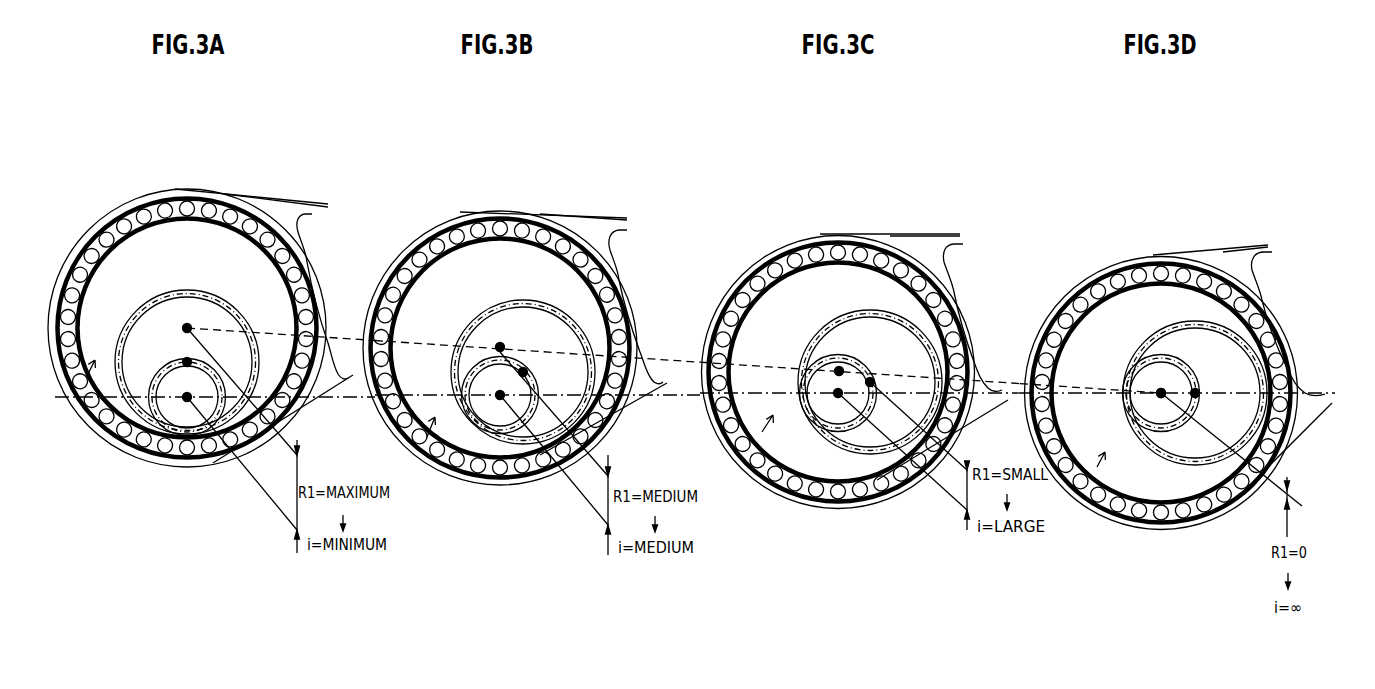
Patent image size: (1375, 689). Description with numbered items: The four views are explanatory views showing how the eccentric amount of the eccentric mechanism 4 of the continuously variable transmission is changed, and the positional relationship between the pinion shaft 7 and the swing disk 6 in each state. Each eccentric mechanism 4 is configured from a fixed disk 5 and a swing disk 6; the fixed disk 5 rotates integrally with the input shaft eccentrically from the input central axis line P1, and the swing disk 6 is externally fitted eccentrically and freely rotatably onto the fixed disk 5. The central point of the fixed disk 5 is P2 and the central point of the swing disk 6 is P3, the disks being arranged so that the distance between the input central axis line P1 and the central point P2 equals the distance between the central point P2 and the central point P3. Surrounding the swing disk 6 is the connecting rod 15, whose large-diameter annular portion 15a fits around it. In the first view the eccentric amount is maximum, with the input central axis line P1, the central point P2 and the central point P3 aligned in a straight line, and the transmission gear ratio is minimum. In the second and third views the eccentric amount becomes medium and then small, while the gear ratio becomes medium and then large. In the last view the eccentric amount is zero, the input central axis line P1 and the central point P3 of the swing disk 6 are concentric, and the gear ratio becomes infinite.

In FIG. 3A, the eccentric mechanism 4 is at (74, 398).
In FIG. 3B, the eccentric mechanism 4 is at (418, 453).
In FIG. 3C, the eccentric mechanism 4 is at (758, 452).
In FIG. 3D, the eccentric mechanism 4 is at (1086, 490).
In FIG. 3A, the fixed disk 5 is at (207, 317).
In FIG. 3B, the fixed disk 5 is at (528, 323).
In FIG. 3C, the fixed disk 5 is at (872, 333).
In FIG. 3D, the fixed disk 5 is at (1197, 343).
In FIG. 3A, the swing disk 6 is at (172, 233).
In FIG. 3B, the swing disk 6 is at (493, 263).
In FIG. 3C, the swing disk 6 is at (830, 290).
In FIG. 3D, the swing disk 6 is at (1147, 298).
In FIG. 3A, the pinion shaft 7 is at (193, 420).
In FIG. 3B, the pinion shaft 7 is at (507, 417).
In FIG. 3C, the pinion shaft 7 is at (845, 415).
In FIG. 3D, the pinion shaft 7 is at (1160, 413).
In FIG. 3A, the connecting rod 15 is at (292, 196).
In FIG. 3B, the connecting rod 15 is at (589, 205).
In FIG. 3C, the connecting rod 15 is at (935, 225).
In FIG. 3D, the connecting rod 15 is at (1243, 242).
In FIG. 3A, the large-diameter annular portion 15a is at (81, 242).
In FIG. 3B, the large-diameter annular portion 15a is at (401, 251).
In FIG. 3C, the large-diameter annular portion 15a is at (737, 280).
In FIG. 3D, the large-diameter annular portion 15a is at (1057, 305).
In FIG. 3A, the input central axis line P1 is at (187, 397).
In FIG. 3B, the input central axis line P1 is at (500, 395).
In FIG. 3C, the input central axis line P1 is at (838, 393).
In FIG. 3D, the input central axis line P1 is at (1161, 393).
In FIG. 3A, the central point of the fixed disk P2 is at (205, 338).
In FIG. 3B, the central point of the fixed disk P2 is at (523, 372).
In FIG. 3C, the central point of the fixed disk P2 is at (870, 382).
In FIG. 3D, the central point of the fixed disk P2 is at (1195, 393).
In FIG. 3A, the central point of the swing disk P3 is at (187, 328).
In FIG. 3B, the central point of the swing disk P3 is at (500, 347).
In FIG. 3C, the central point of the swing disk P3 is at (839, 371).
In FIG. 3D, the central point of the swing disk P3 is at (1161, 393).